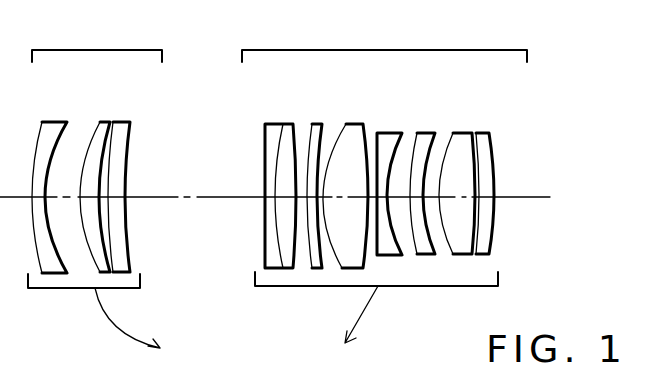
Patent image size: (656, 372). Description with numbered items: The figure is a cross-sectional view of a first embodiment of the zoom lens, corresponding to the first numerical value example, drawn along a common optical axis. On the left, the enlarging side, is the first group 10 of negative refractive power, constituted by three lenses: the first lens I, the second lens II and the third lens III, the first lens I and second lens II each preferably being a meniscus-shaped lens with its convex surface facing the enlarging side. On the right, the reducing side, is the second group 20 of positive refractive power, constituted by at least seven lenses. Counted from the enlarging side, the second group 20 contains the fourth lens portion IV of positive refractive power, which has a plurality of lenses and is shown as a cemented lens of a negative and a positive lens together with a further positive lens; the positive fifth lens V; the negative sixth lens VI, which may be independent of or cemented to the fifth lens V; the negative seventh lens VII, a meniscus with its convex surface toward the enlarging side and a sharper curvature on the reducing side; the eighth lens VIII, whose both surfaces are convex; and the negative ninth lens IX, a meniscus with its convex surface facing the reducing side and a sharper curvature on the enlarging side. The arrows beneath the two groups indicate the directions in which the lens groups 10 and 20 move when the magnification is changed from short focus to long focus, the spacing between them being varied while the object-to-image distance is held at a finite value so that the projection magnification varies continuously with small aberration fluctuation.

The first group 10 is at (82, 50).
The second group 20 is at (372, 50).
The first lens I is at (52, 122).
The second lens II is at (103, 122).
The third lens III is at (125, 122).
The fourth lens portion IV is at (318, 122).
The fifth lens V is at (353, 122).
The sixth lens VI is at (393, 122).
The seventh lens VII is at (430, 122).
The eighth lens VIII is at (462, 122).
The ninth lens IX is at (487, 122).